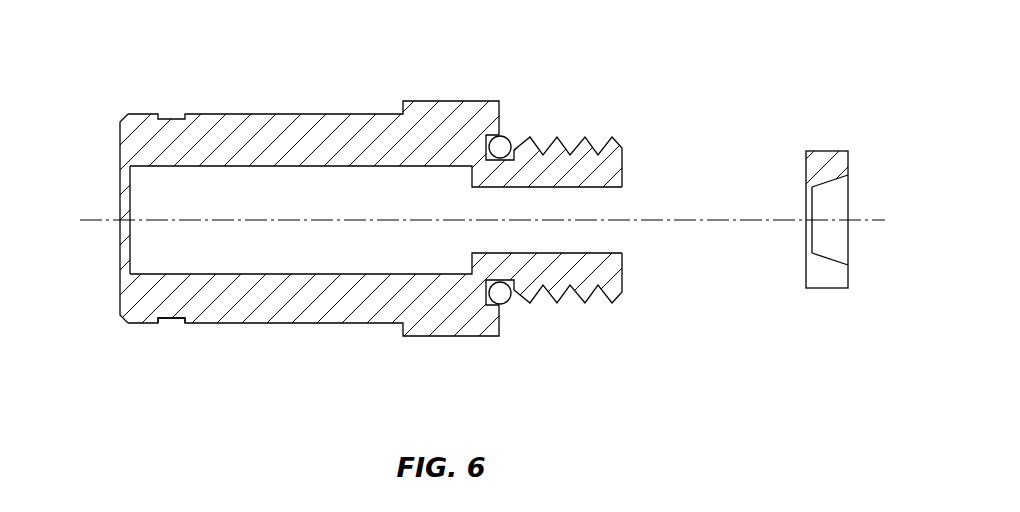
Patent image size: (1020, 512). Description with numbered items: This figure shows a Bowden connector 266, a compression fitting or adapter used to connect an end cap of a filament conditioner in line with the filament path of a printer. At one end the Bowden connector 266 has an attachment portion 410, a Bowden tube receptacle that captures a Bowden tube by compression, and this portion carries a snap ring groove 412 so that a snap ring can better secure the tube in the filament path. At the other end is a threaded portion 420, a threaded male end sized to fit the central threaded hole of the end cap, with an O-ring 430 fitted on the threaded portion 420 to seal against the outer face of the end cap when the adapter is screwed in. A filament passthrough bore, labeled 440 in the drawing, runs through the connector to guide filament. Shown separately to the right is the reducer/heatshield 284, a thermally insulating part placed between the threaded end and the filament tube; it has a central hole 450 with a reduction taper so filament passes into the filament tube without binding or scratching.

The Bowden connector 266 is at (317, 114).
The attachment portion 410 is at (127, 115).
The snap ring groove 412 is at (172, 323).
The inner bore 440 is at (304, 208).
The O-ring 430 is at (510, 138).
The threaded portion 420 is at (580, 303).
The disc / membrane 284 is at (827, 150).
The central hole 450 is at (822, 213).